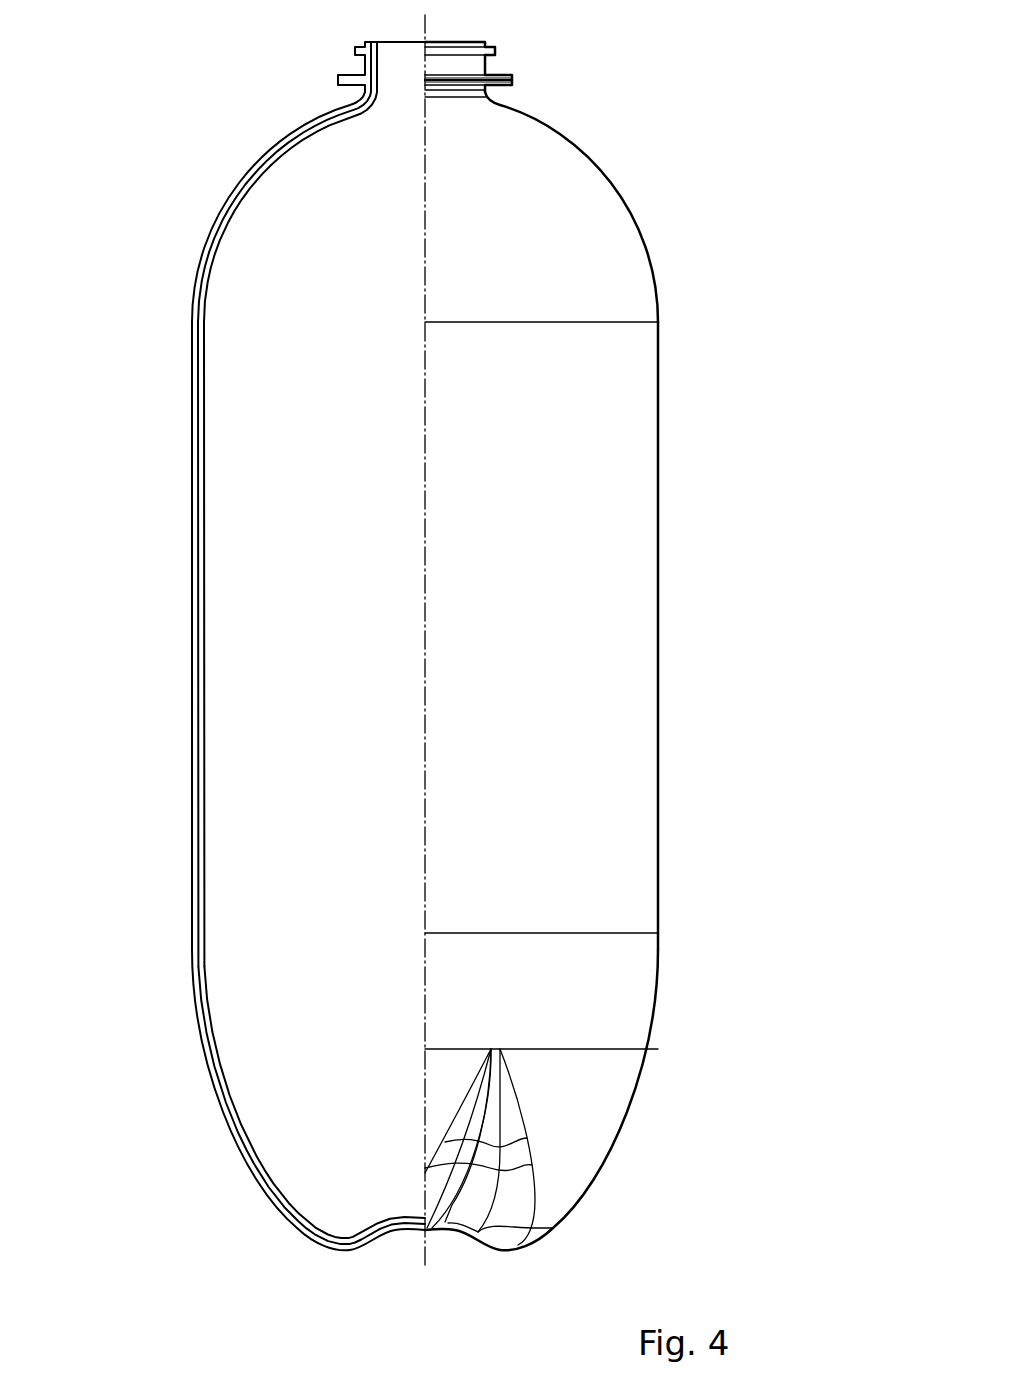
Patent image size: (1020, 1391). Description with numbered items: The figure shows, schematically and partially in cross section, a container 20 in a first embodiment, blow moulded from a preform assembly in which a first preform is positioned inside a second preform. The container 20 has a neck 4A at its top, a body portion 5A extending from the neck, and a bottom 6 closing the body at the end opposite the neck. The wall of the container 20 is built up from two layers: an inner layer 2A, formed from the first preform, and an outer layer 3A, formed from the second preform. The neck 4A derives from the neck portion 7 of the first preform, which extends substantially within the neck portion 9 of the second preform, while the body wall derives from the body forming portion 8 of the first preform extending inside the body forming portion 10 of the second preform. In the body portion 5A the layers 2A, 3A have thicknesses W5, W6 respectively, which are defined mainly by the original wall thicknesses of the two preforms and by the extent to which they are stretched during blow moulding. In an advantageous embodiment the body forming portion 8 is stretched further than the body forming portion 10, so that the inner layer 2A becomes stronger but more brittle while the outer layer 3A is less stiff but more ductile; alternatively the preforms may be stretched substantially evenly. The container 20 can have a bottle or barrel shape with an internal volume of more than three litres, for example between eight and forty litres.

The inner layer 2A is at (199, 684).
The outer layer 3A is at (196, 604).
The neck 4A is at (527, 62).
The body portion 5A is at (689, 620).
The bottom 6 is at (584, 1237).
The neck portion of the first preform 7 is at (477, 48).
The body forming portion of the first preform 8 is at (437, 685).
The neck portion of the second preform 9 is at (477, 48).
The body forming portion of the second preform 10 is at (437, 685).
The container 20 is at (654, 179).
The thickness of the inner layer W5 is at (272, 507).
The thickness of the outer layer W6 is at (267, 423).